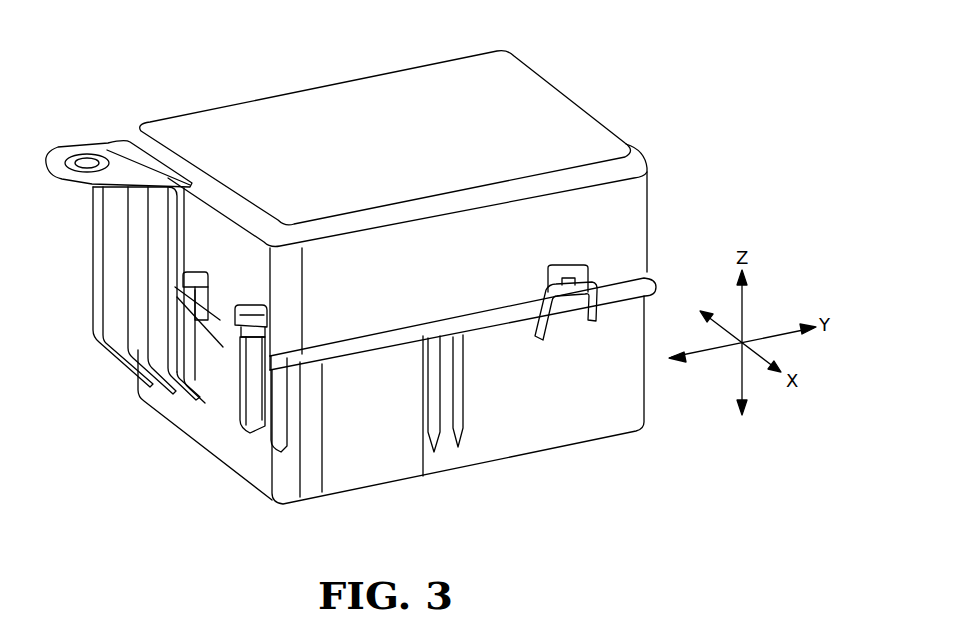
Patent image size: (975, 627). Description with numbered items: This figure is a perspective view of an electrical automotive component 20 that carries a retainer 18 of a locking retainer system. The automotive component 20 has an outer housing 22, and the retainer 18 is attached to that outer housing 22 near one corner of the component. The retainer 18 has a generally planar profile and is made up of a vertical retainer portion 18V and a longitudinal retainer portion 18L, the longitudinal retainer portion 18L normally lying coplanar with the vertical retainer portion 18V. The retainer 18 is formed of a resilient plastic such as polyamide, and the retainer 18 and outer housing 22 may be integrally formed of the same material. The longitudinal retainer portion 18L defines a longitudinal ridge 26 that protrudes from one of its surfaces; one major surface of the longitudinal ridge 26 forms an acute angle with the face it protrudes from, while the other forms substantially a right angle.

The retainer 18 is at (282, 369).
The longitudinal retainer portion 18L is at (250, 307).
The vertical retainer portion 18V is at (253, 393).
The automotive component 20 is at (611, 62).
The outer housing 22 is at (195, 433).
The longitudinal ridge 26 is at (240, 318).